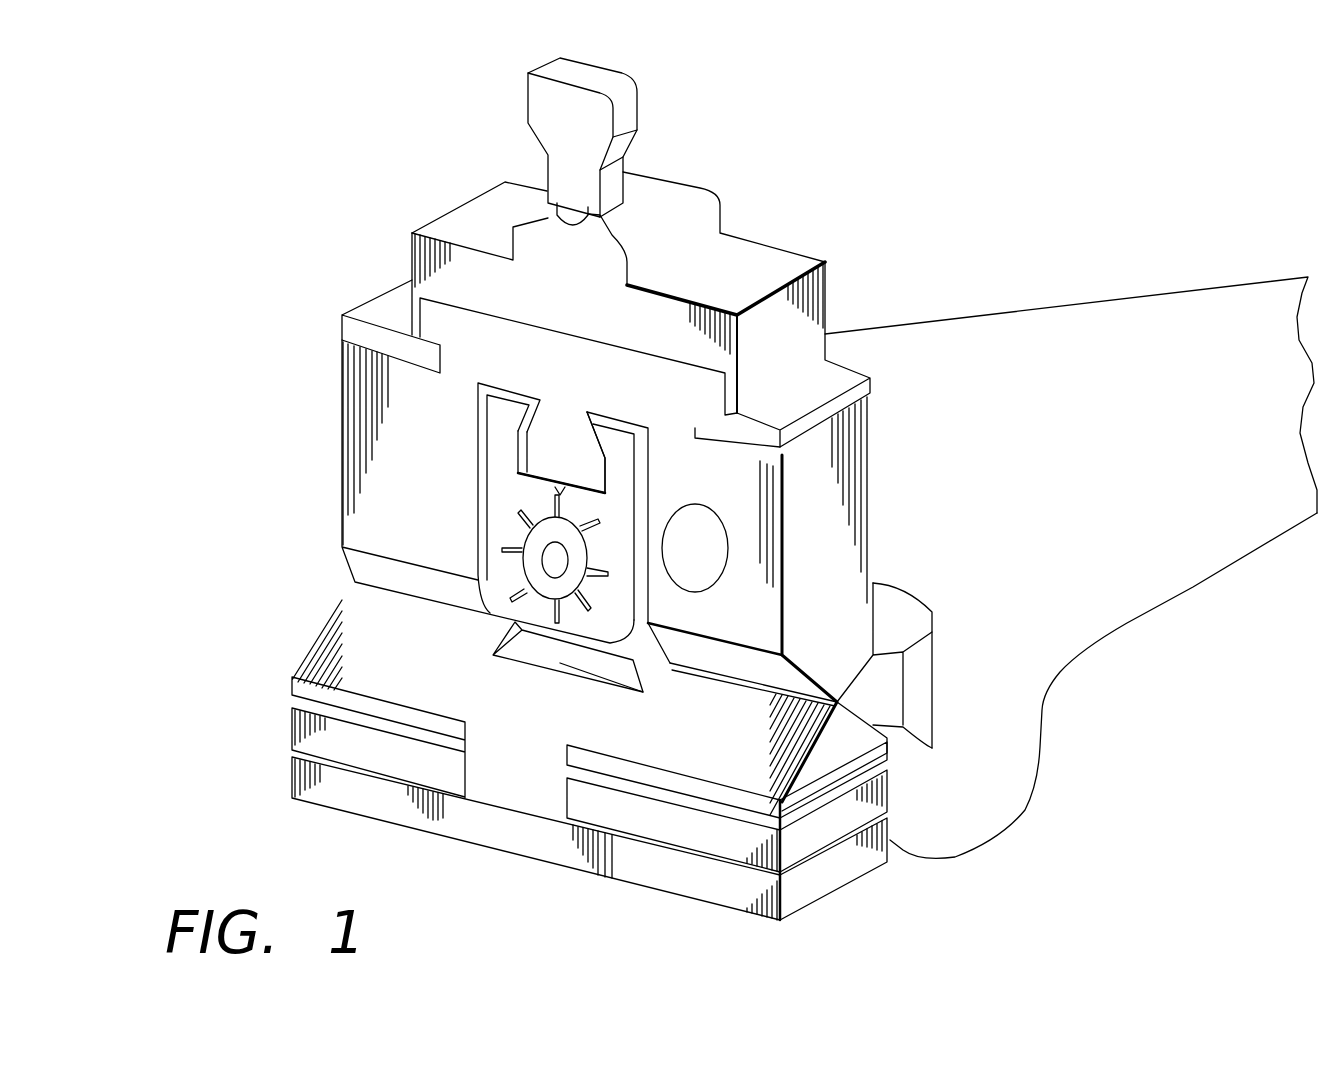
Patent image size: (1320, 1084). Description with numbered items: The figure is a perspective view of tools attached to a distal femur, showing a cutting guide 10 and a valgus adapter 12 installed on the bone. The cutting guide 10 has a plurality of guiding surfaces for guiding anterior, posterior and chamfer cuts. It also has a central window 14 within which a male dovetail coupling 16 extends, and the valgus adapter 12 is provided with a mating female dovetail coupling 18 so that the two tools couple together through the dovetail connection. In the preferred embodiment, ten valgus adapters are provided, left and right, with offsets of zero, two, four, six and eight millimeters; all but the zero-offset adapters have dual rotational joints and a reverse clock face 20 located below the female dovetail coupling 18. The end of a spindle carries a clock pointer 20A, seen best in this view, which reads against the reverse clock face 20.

The cutting guide 10 is at (510, 813).
The valgus adapter 12 is at (487, 538).
The central window 14 is at (473, 412).
The male dovetail coupling 16 is at (565, 450).
The female dovetail coupling 18 is at (605, 437).
The reverse clock face 20 is at (523, 567).
The clock pointer 20A is at (545, 540).